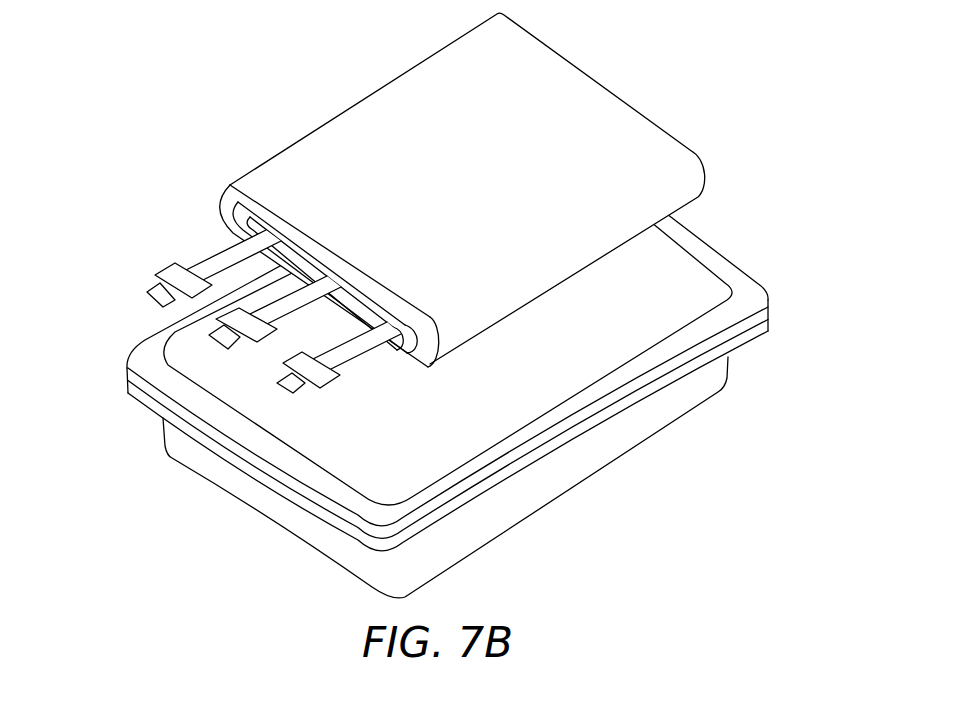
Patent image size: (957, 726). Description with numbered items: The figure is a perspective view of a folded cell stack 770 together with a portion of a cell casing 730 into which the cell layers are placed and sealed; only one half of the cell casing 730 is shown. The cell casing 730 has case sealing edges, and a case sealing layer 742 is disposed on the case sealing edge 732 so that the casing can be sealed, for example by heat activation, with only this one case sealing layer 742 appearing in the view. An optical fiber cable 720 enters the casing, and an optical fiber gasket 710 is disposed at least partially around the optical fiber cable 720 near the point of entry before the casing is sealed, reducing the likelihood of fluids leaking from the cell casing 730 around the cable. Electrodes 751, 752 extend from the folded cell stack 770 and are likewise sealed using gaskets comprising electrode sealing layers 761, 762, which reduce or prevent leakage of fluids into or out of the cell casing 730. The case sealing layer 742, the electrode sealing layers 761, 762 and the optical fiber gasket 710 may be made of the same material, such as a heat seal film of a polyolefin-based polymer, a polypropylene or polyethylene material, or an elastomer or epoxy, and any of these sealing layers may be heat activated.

The optical fiber gasket 710 is at (228, 313).
The optical fiber cable 720 is at (218, 305).
The cell casing 730 is at (695, 393).
The second case sealing edge 732 is at (752, 342).
The second case sealing layer 742 is at (750, 288).
The electrode 751 is at (157, 302).
The electrode 752 is at (360, 343).
The electrode sealing layer 761 is at (160, 270).
The electrode sealing layer 762 is at (330, 385).
The folded cell stack 770 is at (540, 58).